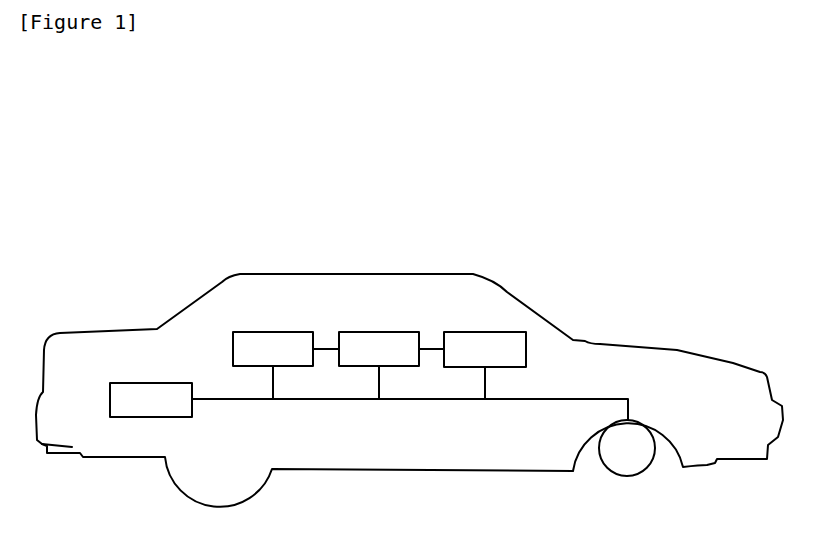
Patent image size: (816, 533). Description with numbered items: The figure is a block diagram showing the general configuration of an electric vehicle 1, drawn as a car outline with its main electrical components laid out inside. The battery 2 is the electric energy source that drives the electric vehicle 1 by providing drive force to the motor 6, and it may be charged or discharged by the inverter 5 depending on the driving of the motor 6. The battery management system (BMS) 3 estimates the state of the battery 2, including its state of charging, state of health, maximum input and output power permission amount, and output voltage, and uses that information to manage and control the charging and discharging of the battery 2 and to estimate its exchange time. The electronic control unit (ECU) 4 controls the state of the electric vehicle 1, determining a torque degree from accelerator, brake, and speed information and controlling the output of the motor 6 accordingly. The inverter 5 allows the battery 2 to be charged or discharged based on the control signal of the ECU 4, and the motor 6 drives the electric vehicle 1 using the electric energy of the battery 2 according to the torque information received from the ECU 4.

The electric vehicle 1 is at (456, 273).
The battery 2 is at (175, 383).
The battery management system (BMS) 3 is at (290, 332).
The electronic control unit (ECU) 4 is at (394, 332).
The inverter 5 is at (501, 332).
The motor 6 is at (648, 426).